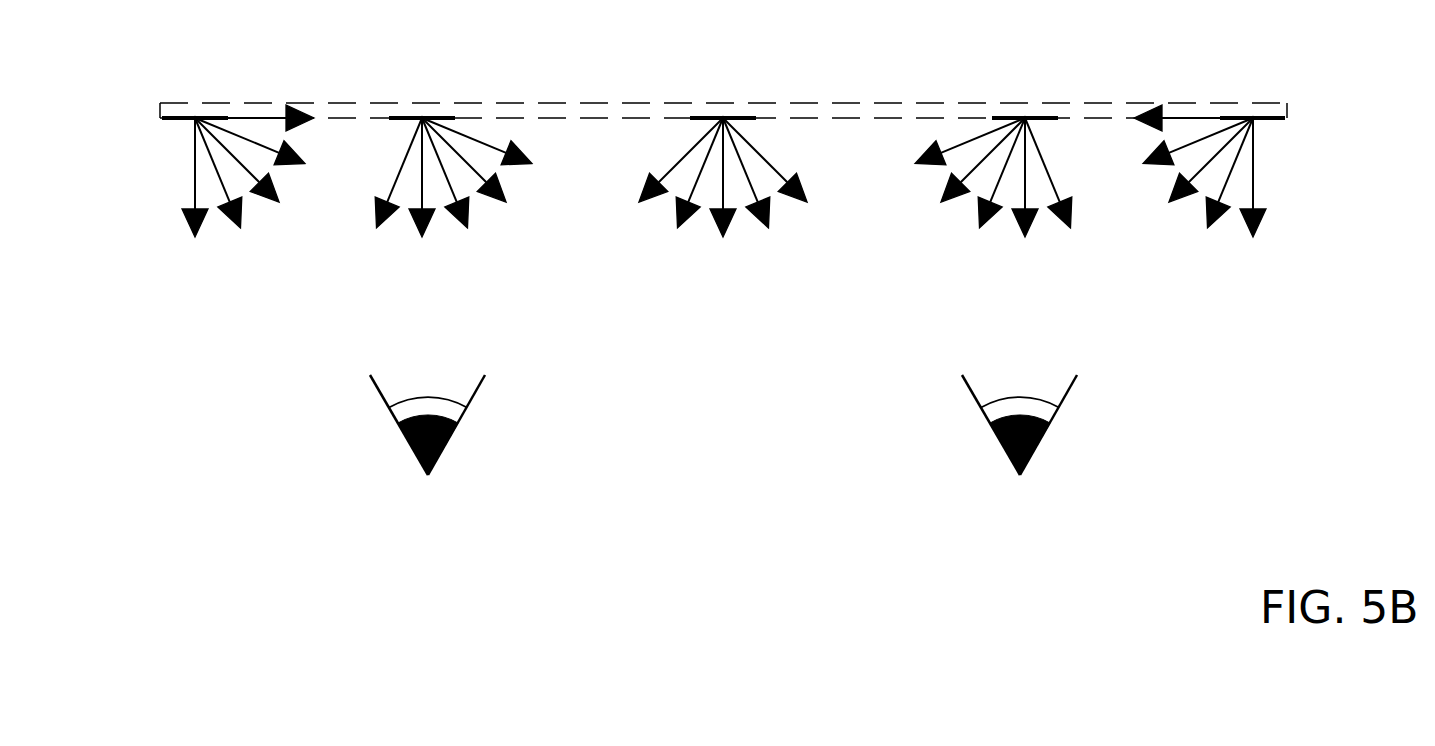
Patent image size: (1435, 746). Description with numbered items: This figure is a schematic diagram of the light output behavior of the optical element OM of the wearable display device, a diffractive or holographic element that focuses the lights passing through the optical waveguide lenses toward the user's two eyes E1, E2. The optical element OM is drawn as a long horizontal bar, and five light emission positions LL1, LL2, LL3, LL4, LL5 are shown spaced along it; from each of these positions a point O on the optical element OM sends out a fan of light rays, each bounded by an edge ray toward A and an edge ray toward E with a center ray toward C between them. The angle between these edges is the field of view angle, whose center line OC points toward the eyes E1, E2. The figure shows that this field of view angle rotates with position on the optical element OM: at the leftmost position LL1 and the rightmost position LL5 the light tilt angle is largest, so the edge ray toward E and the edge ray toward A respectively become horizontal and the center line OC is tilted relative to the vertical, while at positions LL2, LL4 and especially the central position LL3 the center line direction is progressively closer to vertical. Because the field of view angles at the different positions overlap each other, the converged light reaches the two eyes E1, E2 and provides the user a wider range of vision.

The optical element OM is at (177, 111).
The origin point of field of view angle O is at (195, 116).
The first light emitting element LL1 is at (233, 226).
The second light emitting element LL2 is at (447, 226).
The third light emitting element LL3 is at (723, 226).
The fourth light emitting element LL4 is at (999, 226).
The fifth light emitting element LL5 is at (1214, 226).
The rightmost edge of field of view angle A is at (722, 188).
The center line of field of view angle C is at (724, 193).
The leftmost edge of field of view angle E is at (730, 171).
The eye E1 is at (427, 442).
The eye E2 is at (1019, 442).